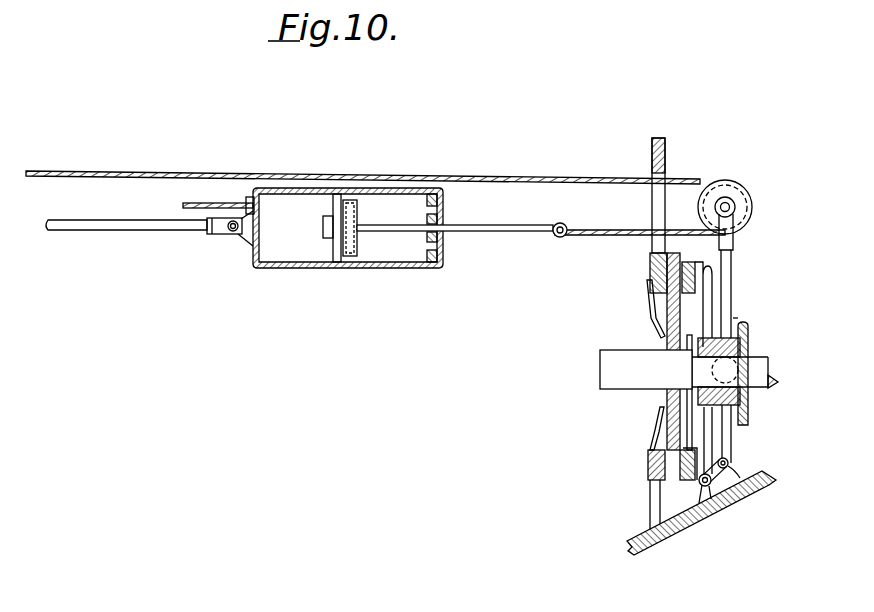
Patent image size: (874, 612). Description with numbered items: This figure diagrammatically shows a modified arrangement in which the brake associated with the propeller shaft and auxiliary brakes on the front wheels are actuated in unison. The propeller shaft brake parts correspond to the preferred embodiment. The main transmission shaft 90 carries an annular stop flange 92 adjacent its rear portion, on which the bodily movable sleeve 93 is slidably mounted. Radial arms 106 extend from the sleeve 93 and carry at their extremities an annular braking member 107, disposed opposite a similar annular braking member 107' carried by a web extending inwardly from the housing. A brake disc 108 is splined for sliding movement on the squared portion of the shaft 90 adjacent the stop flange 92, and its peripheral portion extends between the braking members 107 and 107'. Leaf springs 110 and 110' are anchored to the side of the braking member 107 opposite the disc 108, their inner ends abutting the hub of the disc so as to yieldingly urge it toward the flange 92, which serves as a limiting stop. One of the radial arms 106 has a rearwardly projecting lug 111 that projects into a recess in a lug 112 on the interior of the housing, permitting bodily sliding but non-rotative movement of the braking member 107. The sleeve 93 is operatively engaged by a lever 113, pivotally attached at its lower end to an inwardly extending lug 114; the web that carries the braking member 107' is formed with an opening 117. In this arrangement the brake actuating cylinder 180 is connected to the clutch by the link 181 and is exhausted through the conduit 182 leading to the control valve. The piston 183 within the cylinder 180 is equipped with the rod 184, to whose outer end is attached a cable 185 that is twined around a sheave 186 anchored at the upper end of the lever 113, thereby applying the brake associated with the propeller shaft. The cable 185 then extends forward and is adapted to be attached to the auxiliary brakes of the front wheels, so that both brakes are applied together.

The main transmission shaft 90 is at (628, 384).
The annular stop flange 92 is at (660, 416).
The bodily movable sleeve 93 is at (736, 320).
The radial arms 106 is at (706, 316).
The annular braking member 107 is at (756, 287).
The annular braking member 107' is at (634, 271).
The brake disc 108 is at (668, 331).
The leaf spring 110 is at (607, 309).
The leaf spring 110' is at (628, 461).
The rearwardly projecting lug 111 is at (692, 490).
The lug 112 is at (742, 500).
The lever 113 is at (724, 293).
The inwardly extending lug 114 is at (735, 471).
The opening 117 is at (668, 200).
The brake actuating cylinder 180 is at (312, 269).
The link 181 is at (130, 221).
The conduit 182 is at (210, 203).
The piston 183 is at (341, 194).
The rod 184 is at (527, 233).
The cable 185 is at (132, 154).
The sheave 186 is at (748, 200).